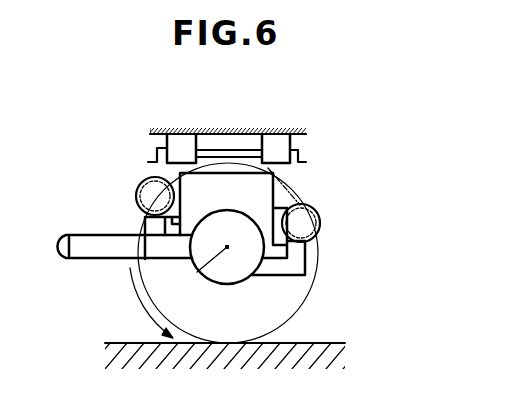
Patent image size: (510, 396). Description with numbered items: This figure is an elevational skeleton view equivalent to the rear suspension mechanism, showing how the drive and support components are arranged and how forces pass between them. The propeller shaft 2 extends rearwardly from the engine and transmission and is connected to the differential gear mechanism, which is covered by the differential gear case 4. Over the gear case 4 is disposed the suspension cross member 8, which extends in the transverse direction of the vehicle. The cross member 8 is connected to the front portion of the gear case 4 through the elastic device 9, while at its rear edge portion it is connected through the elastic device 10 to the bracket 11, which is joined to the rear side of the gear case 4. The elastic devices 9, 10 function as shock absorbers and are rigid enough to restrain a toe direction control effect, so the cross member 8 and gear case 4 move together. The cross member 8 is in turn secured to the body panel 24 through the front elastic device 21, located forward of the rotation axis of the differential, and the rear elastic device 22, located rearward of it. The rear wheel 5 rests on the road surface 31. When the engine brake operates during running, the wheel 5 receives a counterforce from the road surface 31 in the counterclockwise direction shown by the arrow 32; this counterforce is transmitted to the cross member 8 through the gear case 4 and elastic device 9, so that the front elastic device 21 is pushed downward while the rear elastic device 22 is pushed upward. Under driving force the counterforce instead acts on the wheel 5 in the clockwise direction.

The propeller shaft 2 is at (95, 248).
The differential gear case 4 is at (248, 213).
The rear wheel 5 is at (320, 255).
The suspension cross member 8 is at (240, 175).
The elastic device 9 is at (137, 197).
The elastic device 10 is at (318, 215).
The bracket 11 is at (294, 267).
The front elastic device 21 is at (157, 148).
The rear elastic device 22 is at (298, 150).
The body panel 24 is at (242, 134).
The road surface 31 is at (335, 343).
The rotation direction arrow 32 is at (123, 273).